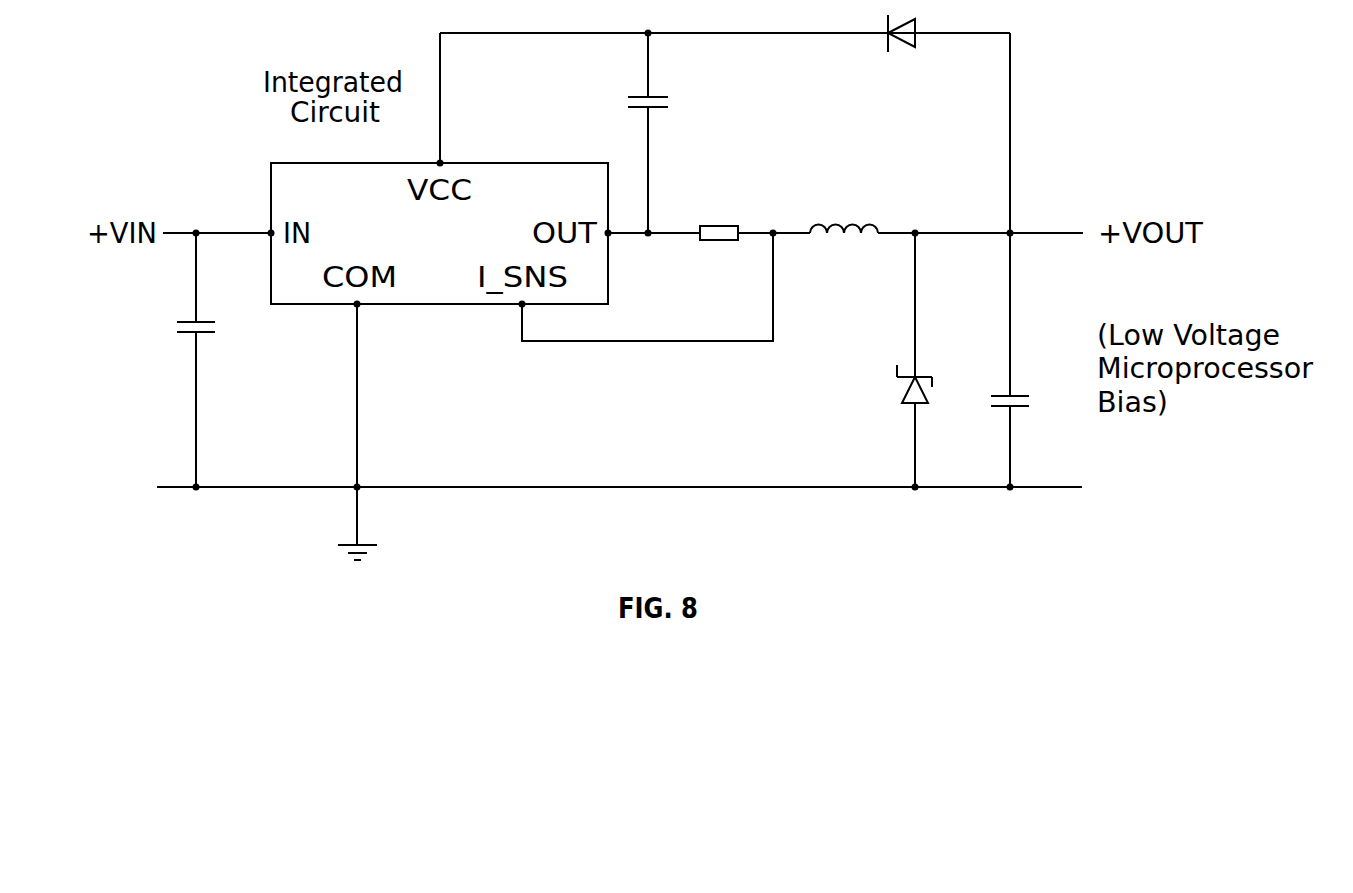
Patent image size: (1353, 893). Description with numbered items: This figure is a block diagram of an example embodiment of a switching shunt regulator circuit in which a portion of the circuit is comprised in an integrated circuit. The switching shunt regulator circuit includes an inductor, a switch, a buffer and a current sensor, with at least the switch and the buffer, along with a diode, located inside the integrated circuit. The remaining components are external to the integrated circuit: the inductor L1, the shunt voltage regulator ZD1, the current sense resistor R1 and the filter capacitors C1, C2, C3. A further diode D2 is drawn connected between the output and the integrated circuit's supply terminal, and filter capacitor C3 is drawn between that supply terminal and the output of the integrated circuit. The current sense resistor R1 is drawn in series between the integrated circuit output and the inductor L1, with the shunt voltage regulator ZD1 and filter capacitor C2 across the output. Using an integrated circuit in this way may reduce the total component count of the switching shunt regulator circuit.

The filter capacitor C1 is at (217, 360).
The filter capacitor C2 is at (1032, 403).
The filter capacitor C3 is at (669, 133).
The diode D2 is at (903, 54).
The current sense resistor R1 is at (719, 252).
The inductor L1 is at (844, 250).
The shunt voltage regulator ZD1 is at (883, 360).